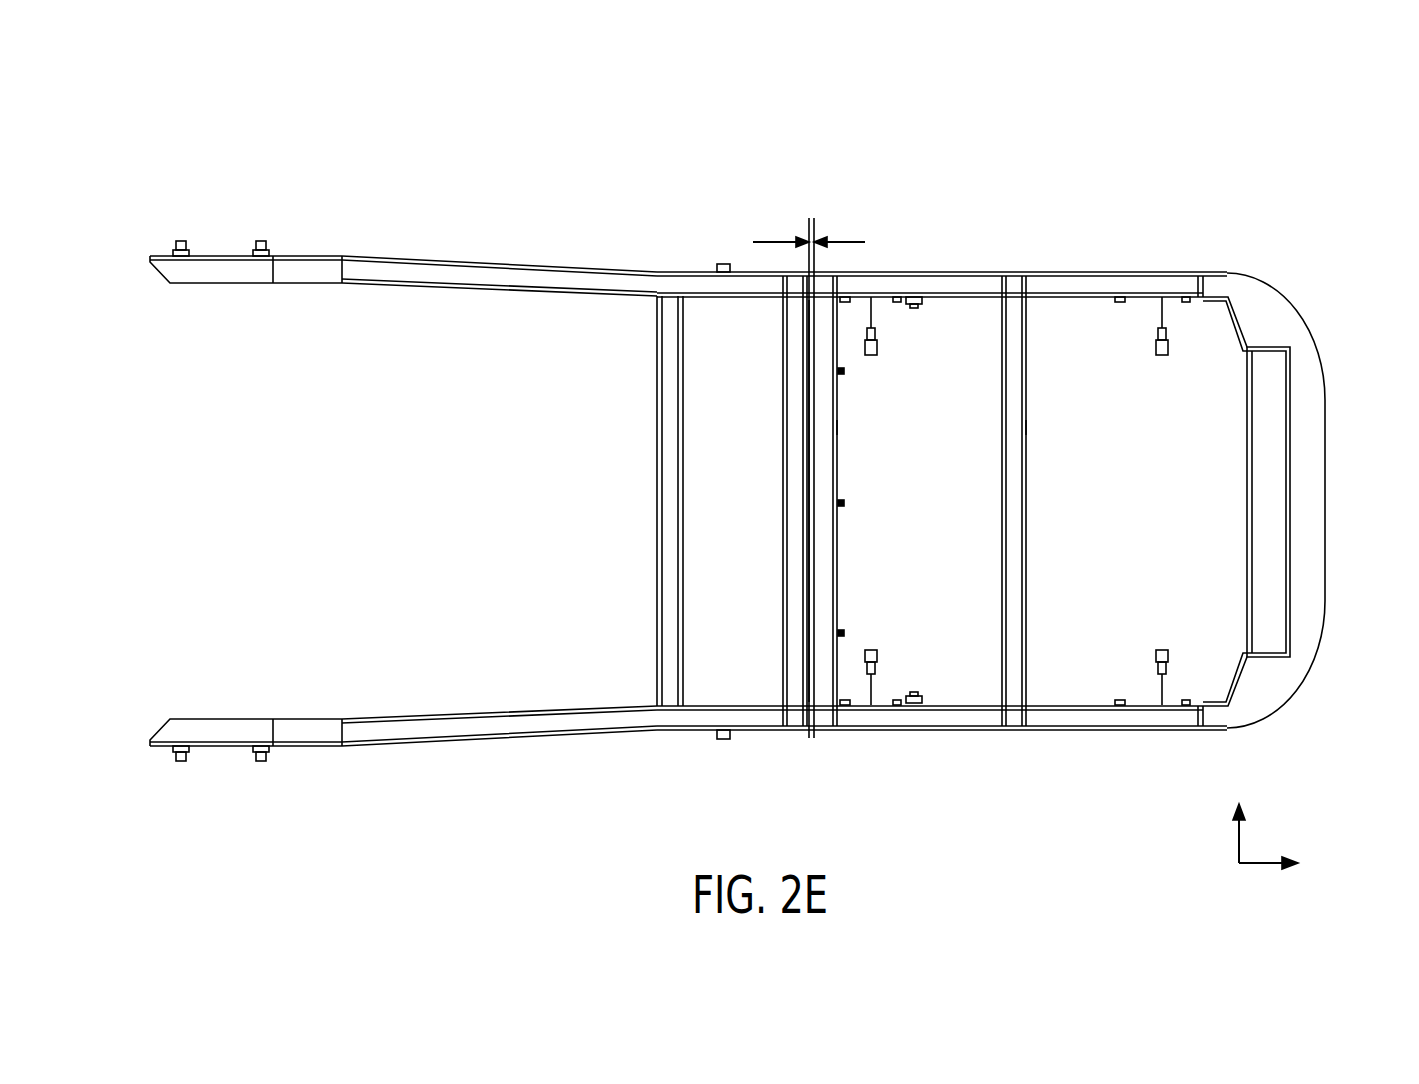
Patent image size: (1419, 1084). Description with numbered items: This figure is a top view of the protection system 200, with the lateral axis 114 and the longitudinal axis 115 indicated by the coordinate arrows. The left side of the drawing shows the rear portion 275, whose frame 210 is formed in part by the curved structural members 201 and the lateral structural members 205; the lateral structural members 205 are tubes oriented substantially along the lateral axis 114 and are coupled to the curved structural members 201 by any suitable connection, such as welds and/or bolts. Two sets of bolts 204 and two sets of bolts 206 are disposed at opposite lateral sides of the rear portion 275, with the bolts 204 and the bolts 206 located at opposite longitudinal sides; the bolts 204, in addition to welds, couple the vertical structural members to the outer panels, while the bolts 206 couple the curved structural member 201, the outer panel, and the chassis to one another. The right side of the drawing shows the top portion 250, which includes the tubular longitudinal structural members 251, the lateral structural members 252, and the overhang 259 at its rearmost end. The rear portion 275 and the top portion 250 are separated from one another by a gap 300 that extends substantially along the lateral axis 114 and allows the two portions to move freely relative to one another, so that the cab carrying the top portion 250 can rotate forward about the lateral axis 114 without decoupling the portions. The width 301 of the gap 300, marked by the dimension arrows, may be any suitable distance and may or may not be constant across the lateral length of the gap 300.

The protection system 200 is at (1098, 124).
The curved structural members 201 is at (497, 291).
The bolts 204 is at (722, 263).
The lateral structural members 205 is at (783, 502).
The bolts 206 is at (181, 240).
The frame 210 is at (595, 630).
The top portion 250 is at (1240, 208).
The longitudinal structural members 251 is at (962, 286).
The lateral structural members 252 is at (837, 427).
The overhang 259 is at (1352, 680).
The rear portion 275 is at (512, 230).
The gap 300 is at (818, 744).
The width 301 is at (824, 241).
The lateral axis 114 is at (1239, 842).
The longitudinal axis 115 is at (1262, 864).